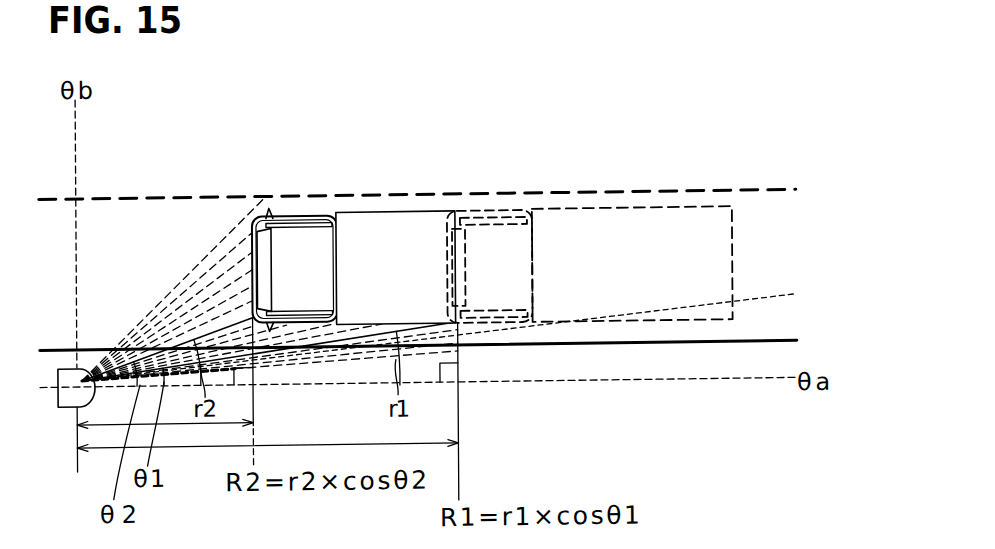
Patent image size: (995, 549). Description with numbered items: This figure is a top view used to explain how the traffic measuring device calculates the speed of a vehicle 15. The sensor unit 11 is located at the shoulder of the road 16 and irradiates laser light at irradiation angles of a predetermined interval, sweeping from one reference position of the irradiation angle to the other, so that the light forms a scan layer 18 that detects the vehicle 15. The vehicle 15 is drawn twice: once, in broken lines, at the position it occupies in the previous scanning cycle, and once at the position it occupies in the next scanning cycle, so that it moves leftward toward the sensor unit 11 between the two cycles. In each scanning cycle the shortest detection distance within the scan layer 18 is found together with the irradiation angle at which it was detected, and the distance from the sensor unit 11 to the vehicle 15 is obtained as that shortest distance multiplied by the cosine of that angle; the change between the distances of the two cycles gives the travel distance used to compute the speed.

The sensor unit 11 is at (62, 408).
The vehicle 15 is at (363, 226).
The road 16 is at (779, 216).
The scan layer 18 is at (153, 231).